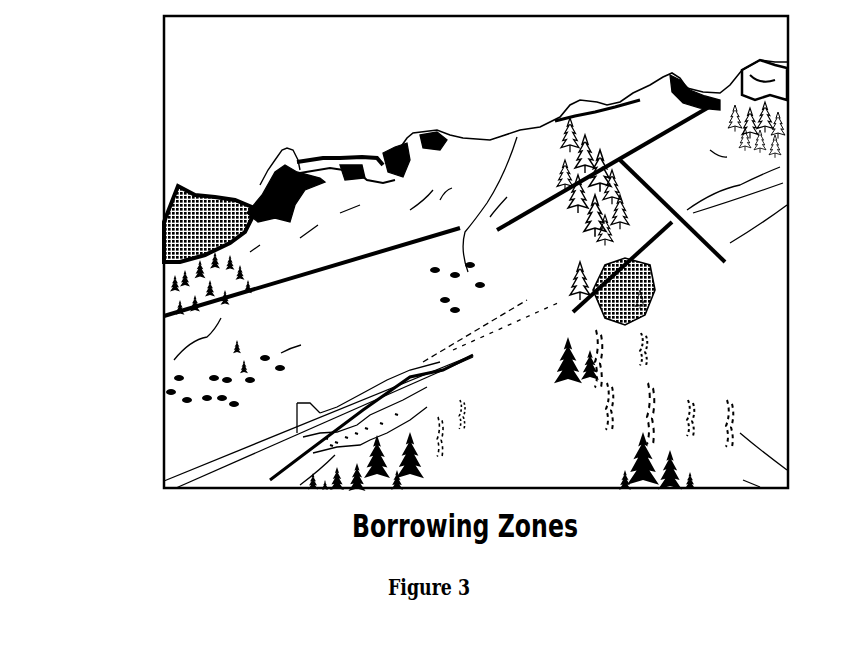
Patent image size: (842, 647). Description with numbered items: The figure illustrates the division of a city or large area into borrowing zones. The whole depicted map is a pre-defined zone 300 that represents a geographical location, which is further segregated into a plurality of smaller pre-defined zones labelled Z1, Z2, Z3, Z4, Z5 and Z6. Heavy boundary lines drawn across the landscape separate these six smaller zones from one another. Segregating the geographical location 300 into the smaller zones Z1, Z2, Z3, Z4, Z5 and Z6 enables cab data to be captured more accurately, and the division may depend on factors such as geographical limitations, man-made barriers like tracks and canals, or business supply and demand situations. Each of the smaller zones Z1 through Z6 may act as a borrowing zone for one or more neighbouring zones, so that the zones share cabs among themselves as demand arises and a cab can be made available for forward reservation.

The pre-defined zone 300 is at (106, 165).
The pre-defined zone Z1 is at (316, 238).
The pre-defined zone Z2 is at (606, 166).
The pre-defined zone Z3 is at (672, 207).
The pre-defined zone Z4 is at (610, 267).
The pre-defined zone Z5 is at (632, 313).
The pre-defined zone Z6 is at (334, 360).